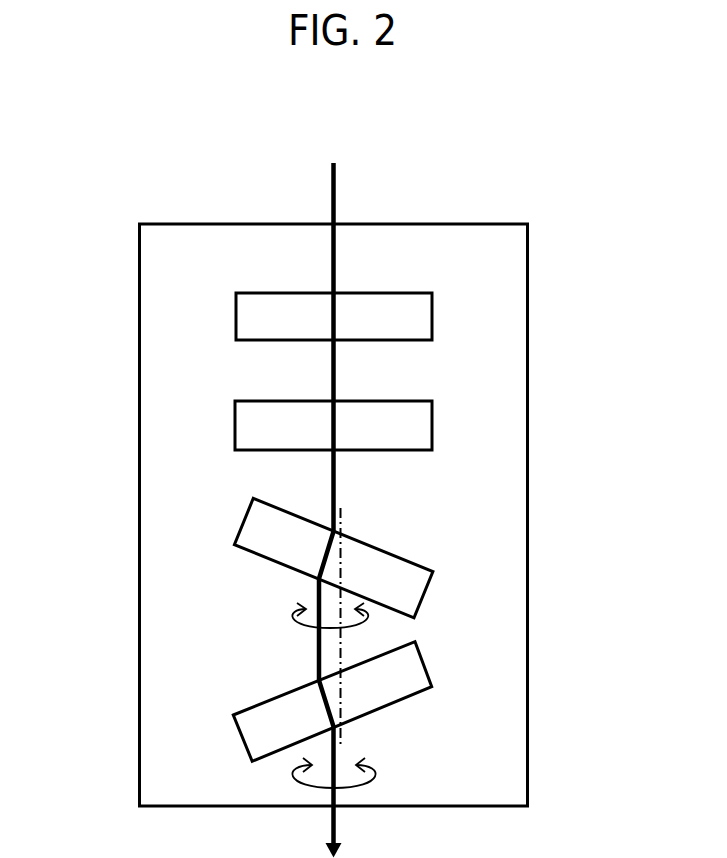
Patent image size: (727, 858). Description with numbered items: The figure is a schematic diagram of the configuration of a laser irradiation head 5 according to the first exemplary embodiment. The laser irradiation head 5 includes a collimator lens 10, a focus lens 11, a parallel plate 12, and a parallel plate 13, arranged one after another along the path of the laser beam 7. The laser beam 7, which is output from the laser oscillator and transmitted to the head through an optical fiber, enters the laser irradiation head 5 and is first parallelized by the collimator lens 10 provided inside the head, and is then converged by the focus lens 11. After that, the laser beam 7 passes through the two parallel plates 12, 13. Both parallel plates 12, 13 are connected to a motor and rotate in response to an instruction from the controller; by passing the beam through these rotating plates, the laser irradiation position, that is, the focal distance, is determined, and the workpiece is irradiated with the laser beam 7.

The laser irradiation head 5 is at (140, 320).
The laser beam 7 is at (336, 200).
The collimator lens 10 is at (432, 316).
The focus lens 11 is at (432, 425).
The parallel plate 12 is at (407, 560).
The parallel plate 13 is at (428, 664).